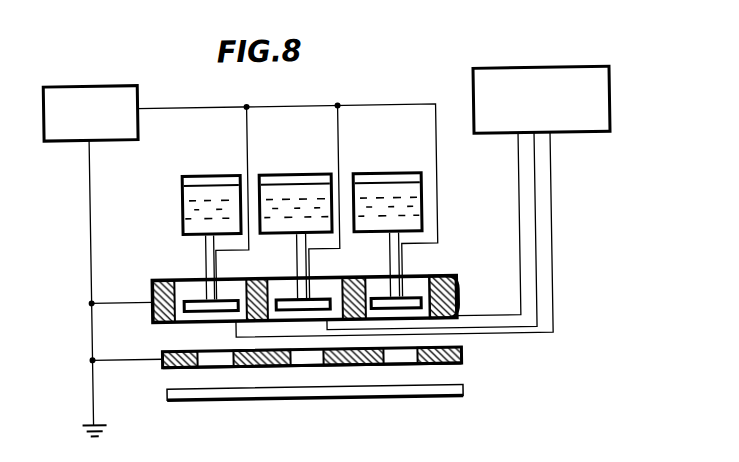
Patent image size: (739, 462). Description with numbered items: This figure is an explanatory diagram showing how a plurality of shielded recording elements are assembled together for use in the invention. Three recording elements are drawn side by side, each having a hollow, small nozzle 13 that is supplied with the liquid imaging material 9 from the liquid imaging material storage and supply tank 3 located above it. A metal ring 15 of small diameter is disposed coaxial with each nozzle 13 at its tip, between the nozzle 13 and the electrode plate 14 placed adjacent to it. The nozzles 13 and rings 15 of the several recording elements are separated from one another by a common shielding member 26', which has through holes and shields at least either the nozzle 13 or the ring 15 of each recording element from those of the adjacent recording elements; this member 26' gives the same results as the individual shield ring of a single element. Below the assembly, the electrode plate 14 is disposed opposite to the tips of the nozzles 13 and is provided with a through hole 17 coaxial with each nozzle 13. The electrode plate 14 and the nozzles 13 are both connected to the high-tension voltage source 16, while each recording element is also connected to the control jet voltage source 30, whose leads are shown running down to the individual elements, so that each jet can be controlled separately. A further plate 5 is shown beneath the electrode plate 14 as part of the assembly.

The high-tension voltage source 16 is at (134, 88).
The control jet voltage source 30 is at (519, 50).
The liquid imaging material storage and supply tank 3 is at (183, 193).
The liquid imaging material 9 is at (381, 183).
The nozzle 13 is at (390, 251).
The metal ring 15 is at (426, 277).
The shielding member 26' is at (465, 296).
The electrode plate 14 is at (460, 353).
The through hole 17 is at (398, 365).
The recording medium 5 is at (408, 398).